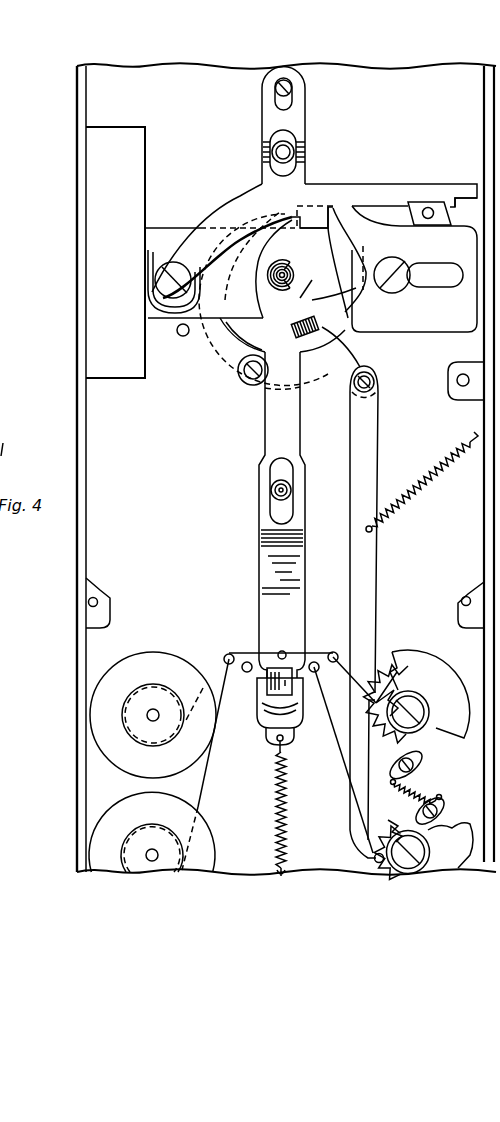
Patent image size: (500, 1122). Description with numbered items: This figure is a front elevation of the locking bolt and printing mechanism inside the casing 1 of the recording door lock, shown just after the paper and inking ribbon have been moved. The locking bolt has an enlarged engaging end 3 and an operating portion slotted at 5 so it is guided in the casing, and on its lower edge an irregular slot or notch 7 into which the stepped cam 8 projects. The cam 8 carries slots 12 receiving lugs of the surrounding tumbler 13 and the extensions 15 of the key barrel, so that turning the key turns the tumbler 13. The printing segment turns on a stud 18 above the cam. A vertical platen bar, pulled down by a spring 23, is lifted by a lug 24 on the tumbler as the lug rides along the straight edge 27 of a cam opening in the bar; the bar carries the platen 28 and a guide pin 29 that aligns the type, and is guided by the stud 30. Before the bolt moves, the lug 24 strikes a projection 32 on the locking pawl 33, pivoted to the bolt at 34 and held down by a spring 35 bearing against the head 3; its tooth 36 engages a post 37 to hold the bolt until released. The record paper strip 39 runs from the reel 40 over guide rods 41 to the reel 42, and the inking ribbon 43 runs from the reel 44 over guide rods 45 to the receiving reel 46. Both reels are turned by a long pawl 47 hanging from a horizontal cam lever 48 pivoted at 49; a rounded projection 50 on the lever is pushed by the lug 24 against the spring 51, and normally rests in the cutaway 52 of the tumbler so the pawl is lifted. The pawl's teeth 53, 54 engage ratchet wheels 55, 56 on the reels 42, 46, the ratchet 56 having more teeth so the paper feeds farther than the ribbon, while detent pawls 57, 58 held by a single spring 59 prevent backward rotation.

The casing 1 is at (78, 413).
The enlarged engaging end 3 is at (190, 252).
The slot 5 is at (432, 276).
The slot or notch 7 is at (257, 283).
The stepped cam 8 is at (282, 330).
The slots 12 is at (293, 266).
The tumbler 13 is at (267, 326).
The extensions 15 is at (303, 297).
The stud 18 is at (290, 152).
The spring 23 is at (286, 801).
The lug 24 is at (344, 318).
The straight edge 27 is at (243, 284).
The platen 28 is at (280, 697).
The guide pin 29 is at (288, 654).
The stud 30 is at (272, 493).
The projection 32 is at (323, 222).
The locking pawl 33 is at (357, 192).
The pivot 34 is at (165, 289).
The spring 35 is at (148, 269).
The tooth 36 is at (456, 197).
The post 37 is at (420, 203).
The paper strip 39 is at (199, 798).
The reel 40 is at (152, 832).
The guide rods 41 is at (244, 670).
The reel 42 is at (432, 854).
The inking ribbon 43 is at (203, 688).
The reel 44 is at (153, 715).
The guide rods 45 is at (226, 656).
The receiving reel 46 is at (425, 703).
The long pawl 47 is at (368, 568).
The cam lever 48 is at (340, 381).
The pivot 49 is at (244, 378).
The rounded projection 50 is at (345, 340).
The spring 51 is at (420, 481).
The cutaway portion 52 is at (357, 287).
The tooth 53 is at (374, 859).
The tooth 54 is at (378, 699).
The ratchet wheel 55 is at (410, 825).
The ratchet wheel 56 is at (426, 661).
The detent pawl 57 is at (445, 809).
The detent pawl 58 is at (416, 762).
The spring 59 is at (438, 800).